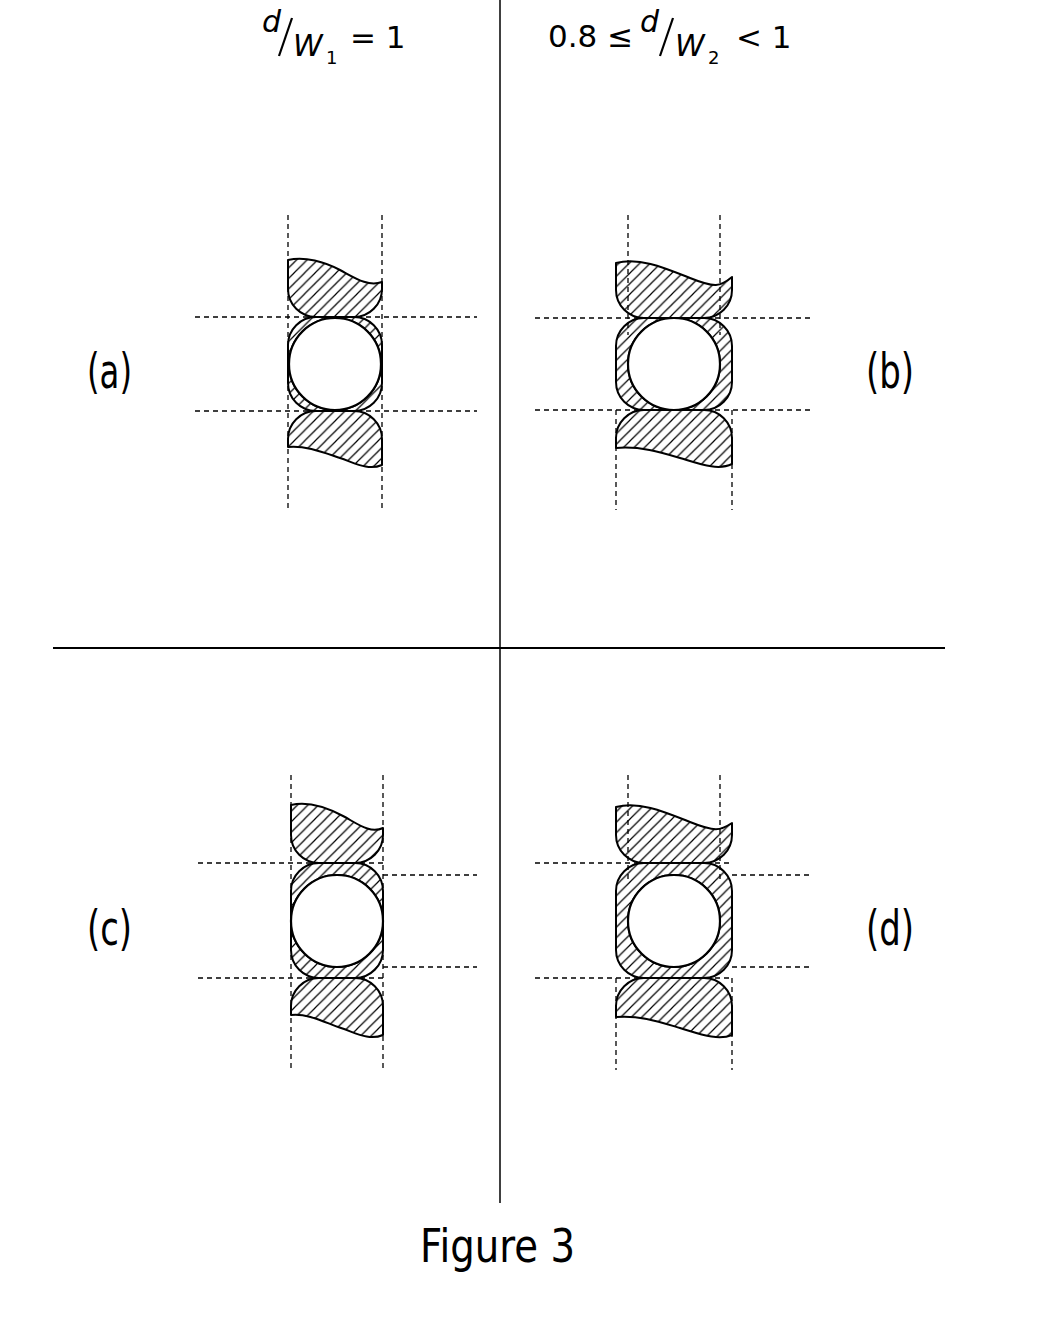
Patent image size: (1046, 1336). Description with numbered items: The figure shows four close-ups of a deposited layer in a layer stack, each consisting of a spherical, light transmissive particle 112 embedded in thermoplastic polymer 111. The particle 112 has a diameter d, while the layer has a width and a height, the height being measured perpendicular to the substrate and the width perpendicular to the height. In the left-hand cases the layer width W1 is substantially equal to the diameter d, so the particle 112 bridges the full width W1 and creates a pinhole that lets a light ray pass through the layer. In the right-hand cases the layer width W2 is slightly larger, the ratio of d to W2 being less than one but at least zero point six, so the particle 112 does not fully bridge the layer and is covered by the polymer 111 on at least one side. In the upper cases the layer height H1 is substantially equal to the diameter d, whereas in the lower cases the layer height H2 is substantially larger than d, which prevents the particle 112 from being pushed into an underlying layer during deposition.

The thermoplastic polymer 111 is at (298, 326).
The particle 112 is at (359, 382).
The particle diameter d is at (555, 587).
The layer width W1 is at (335, 787).
The layer width W2 is at (674, 787).
The layer height H1 is at (363, 364).
The layer height H2 is at (364, 920).